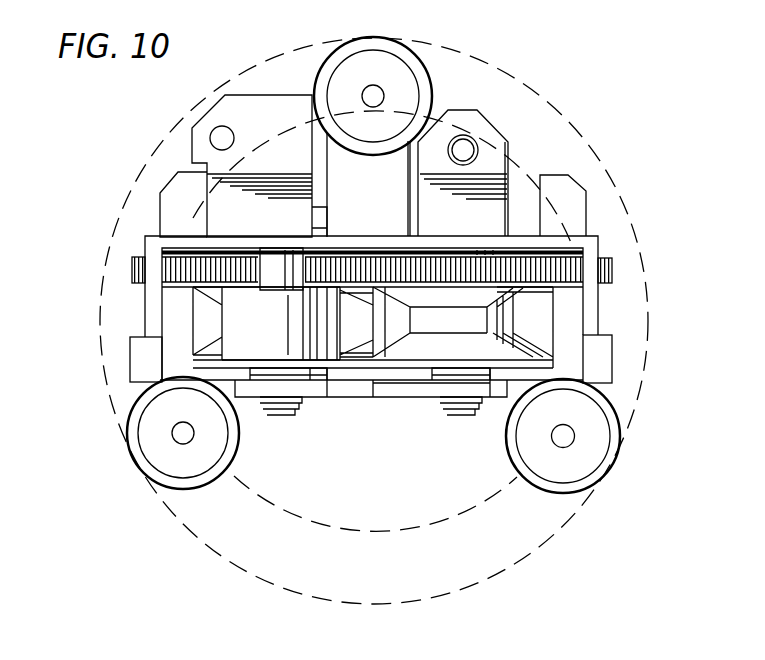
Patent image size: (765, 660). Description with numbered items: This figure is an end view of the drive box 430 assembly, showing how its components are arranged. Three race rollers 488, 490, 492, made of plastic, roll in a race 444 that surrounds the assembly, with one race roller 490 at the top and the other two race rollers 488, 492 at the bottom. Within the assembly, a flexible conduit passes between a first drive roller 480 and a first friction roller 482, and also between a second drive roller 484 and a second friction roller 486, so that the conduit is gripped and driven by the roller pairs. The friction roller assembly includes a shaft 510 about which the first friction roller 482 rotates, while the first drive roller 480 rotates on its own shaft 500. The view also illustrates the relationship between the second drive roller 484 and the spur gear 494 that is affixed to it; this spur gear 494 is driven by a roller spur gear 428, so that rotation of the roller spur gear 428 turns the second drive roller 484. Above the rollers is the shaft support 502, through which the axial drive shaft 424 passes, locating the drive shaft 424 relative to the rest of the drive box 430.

The axial drive shaft 424 is at (465, 148).
The roller spur gear 428 is at (612, 262).
The drive box 430 is at (592, 234).
The race 444 is at (487, 58).
The first drive roller 480 is at (517, 353).
The first friction roller 482 is at (318, 362).
The second drive roller 484 is at (210, 347).
The second friction roller 486 is at (398, 316).
The race roller 488 is at (597, 470).
The race roller 490 is at (390, 57).
The race roller 492 is at (153, 467).
The spur gear 494 is at (133, 268).
The shaft 500 is at (467, 413).
The shaft support 502 is at (508, 142).
The shaft 510 is at (276, 262).